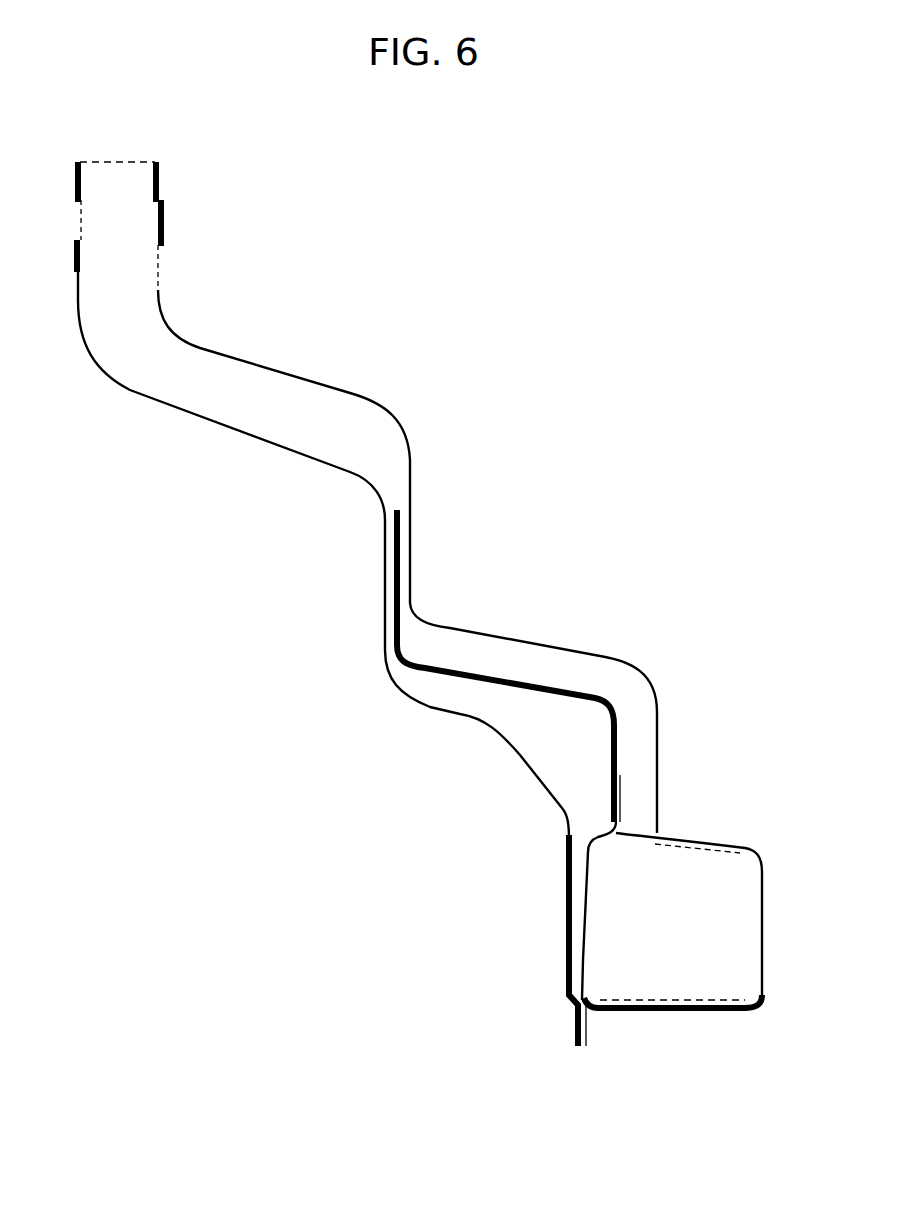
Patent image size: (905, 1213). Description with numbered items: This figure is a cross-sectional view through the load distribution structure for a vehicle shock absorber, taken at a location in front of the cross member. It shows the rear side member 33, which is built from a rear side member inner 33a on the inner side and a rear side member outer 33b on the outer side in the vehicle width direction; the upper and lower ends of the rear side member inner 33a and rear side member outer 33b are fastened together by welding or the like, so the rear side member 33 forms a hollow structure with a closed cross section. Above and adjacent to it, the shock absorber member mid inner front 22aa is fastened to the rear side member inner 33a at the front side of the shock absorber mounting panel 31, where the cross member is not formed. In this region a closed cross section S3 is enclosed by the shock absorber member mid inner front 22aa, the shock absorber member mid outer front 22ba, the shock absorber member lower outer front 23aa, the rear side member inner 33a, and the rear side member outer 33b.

The closed cross section S3 is at (160, 272).
The shock absorber member mid outer front 22ba is at (207, 420).
The shock absorber member mid inner front 22aa is at (510, 637).
The shock absorber mounting panel 31 is at (553, 690).
The shock absorber member lower outer front 23aa is at (473, 716).
The rear side member outer 33b is at (588, 927).
The rear side member inner 33a is at (770, 944).
The rear side member 33 is at (807, 1100).